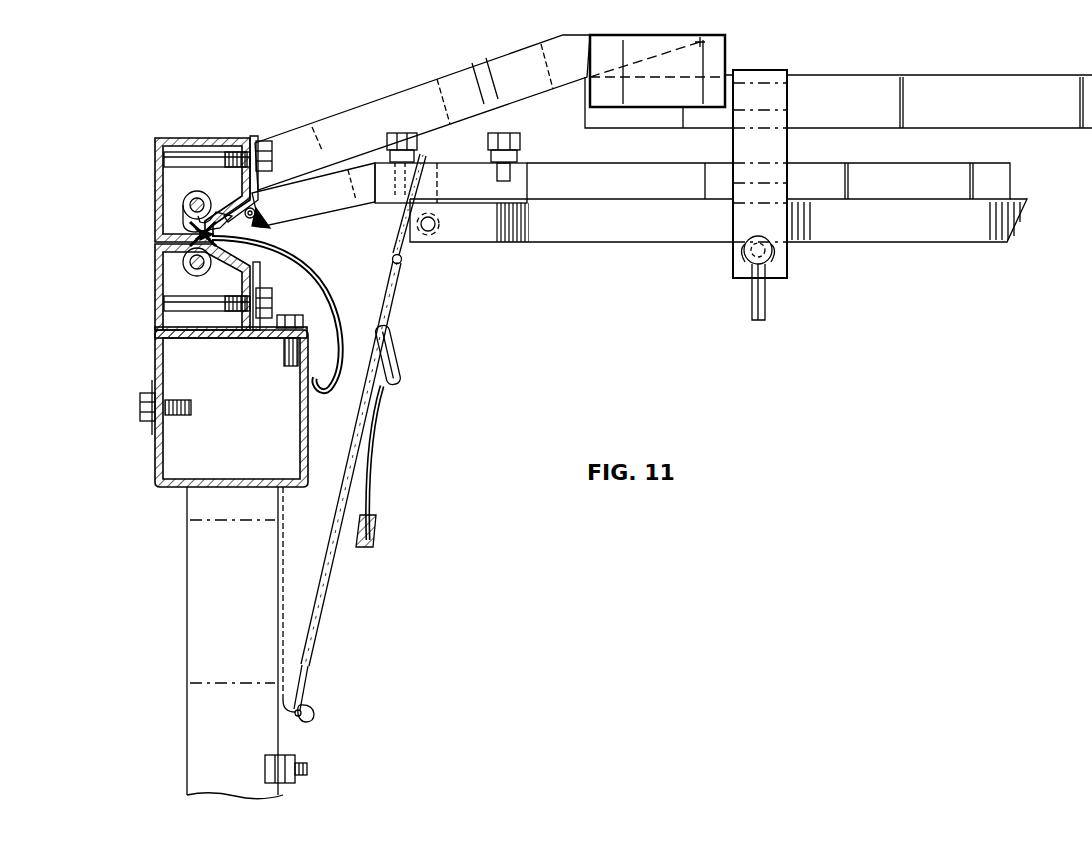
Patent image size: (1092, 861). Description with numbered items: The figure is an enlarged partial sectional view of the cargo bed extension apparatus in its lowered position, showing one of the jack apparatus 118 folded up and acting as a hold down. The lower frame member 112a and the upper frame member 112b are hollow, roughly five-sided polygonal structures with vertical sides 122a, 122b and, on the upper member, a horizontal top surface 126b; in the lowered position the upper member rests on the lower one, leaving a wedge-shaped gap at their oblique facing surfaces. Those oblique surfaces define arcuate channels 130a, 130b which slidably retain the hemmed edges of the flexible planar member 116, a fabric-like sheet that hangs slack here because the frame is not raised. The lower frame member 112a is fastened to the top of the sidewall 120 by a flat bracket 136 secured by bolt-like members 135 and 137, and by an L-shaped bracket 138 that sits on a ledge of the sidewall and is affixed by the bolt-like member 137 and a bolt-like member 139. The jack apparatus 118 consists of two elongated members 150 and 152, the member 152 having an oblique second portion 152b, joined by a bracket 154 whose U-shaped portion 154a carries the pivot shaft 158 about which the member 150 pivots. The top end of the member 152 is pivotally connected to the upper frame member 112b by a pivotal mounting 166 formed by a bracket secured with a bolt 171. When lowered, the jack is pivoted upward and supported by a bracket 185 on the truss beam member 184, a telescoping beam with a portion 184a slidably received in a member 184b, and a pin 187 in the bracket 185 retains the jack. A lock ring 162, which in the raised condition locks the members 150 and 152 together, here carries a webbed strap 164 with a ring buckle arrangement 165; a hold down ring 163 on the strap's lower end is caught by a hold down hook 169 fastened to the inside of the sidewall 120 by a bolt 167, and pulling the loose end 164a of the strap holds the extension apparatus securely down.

The lower frame member 112a is at (152, 241).
The upper frame member 112b is at (171, 130).
The flexible planar member 116 is at (330, 300).
The jack apparatus 118 is at (674, 272).
The sidewall 120 is at (156, 461).
The vertical side of lower frame member 122a is at (157, 268).
The vertical side of upper frame member 122b is at (160, 197).
The top surface of upper frame member 126b is at (238, 136).
The channel of lower frame member 130a is at (185, 274).
The channel of upper frame member 130b is at (152, 170).
The bolt-like member 135 is at (148, 397).
The bracket 136 is at (152, 426).
The bolt-like member 137 is at (156, 318).
The L-shaped bracket 138 is at (262, 336).
The bolt-like member 139 is at (282, 366).
The elongated member 150 is at (943, 243).
The elongated member 152 is at (650, 160).
The second relatively straight portion 152b is at (350, 208).
The bracket 154 is at (528, 180).
The U-shaped portion of bracket 154a is at (506, 232).
The pivot shaft 158 is at (436, 240).
The lock ring 162 is at (427, 165).
The hold down ring 163 is at (310, 690).
The webbed strap 164 is at (322, 628).
The loose end of hold down strap 164a is at (371, 536).
The ring buckle arrangement 165 is at (394, 360).
The pivotal mounting 166 is at (262, 226).
The bolt 167 is at (308, 770).
The hold down hook 169 is at (316, 720).
The bolt 171 is at (205, 150).
The truss beam member 184 is at (349, 108).
The truss beam portion 184a is at (423, 88).
The truss beam member 184b is at (543, 80).
The bracket 185 is at (786, 148).
The pin 187 is at (778, 300).